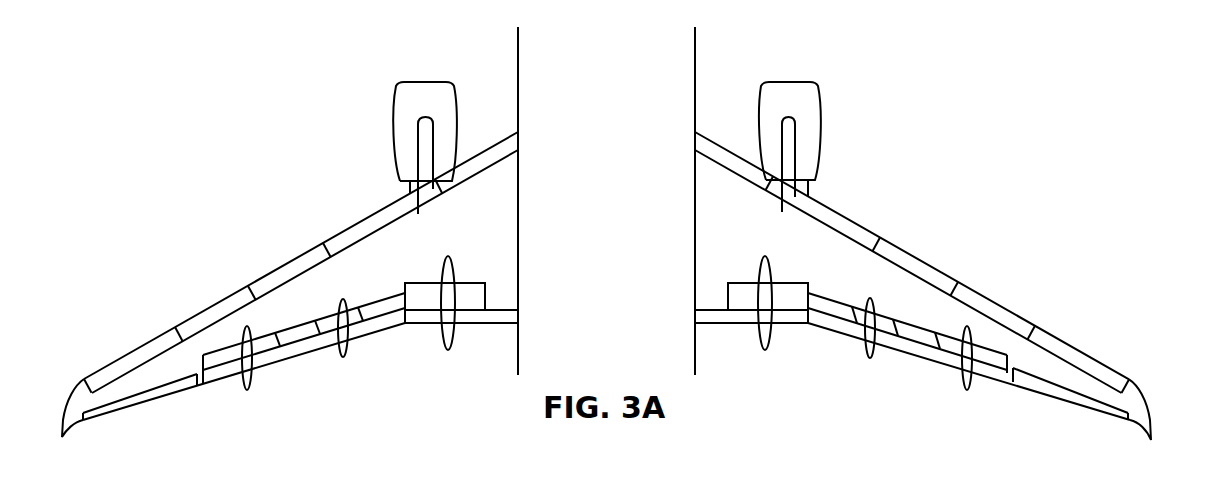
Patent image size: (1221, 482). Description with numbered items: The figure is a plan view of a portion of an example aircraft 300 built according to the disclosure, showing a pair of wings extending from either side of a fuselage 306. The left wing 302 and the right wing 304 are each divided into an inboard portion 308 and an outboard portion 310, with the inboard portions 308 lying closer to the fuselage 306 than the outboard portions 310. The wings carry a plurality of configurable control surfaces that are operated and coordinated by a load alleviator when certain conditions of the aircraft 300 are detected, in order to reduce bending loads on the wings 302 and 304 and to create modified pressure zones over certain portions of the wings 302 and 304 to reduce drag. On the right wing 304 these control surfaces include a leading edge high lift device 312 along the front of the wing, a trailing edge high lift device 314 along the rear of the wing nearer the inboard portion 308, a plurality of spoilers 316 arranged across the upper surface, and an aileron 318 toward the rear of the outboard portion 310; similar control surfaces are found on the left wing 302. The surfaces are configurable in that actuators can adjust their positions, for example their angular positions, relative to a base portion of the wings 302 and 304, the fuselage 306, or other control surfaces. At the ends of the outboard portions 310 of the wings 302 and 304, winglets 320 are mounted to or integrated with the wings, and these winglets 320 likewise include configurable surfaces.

The aircraft 300 is at (518, 36).
The left wing 302 is at (365, 219).
The right wing 304 is at (717, 142).
The fuselage 306 is at (623, 103).
The inboard portion 308 is at (492, 243).
The outboard portion 310 is at (157, 370).
The leading edge high lift device 312 is at (848, 224).
The trailing edge high lift device 314 is at (833, 322).
The spoilers 316 is at (943, 343).
The aileron 318 is at (1115, 413).
The winglets 320 is at (1152, 418).